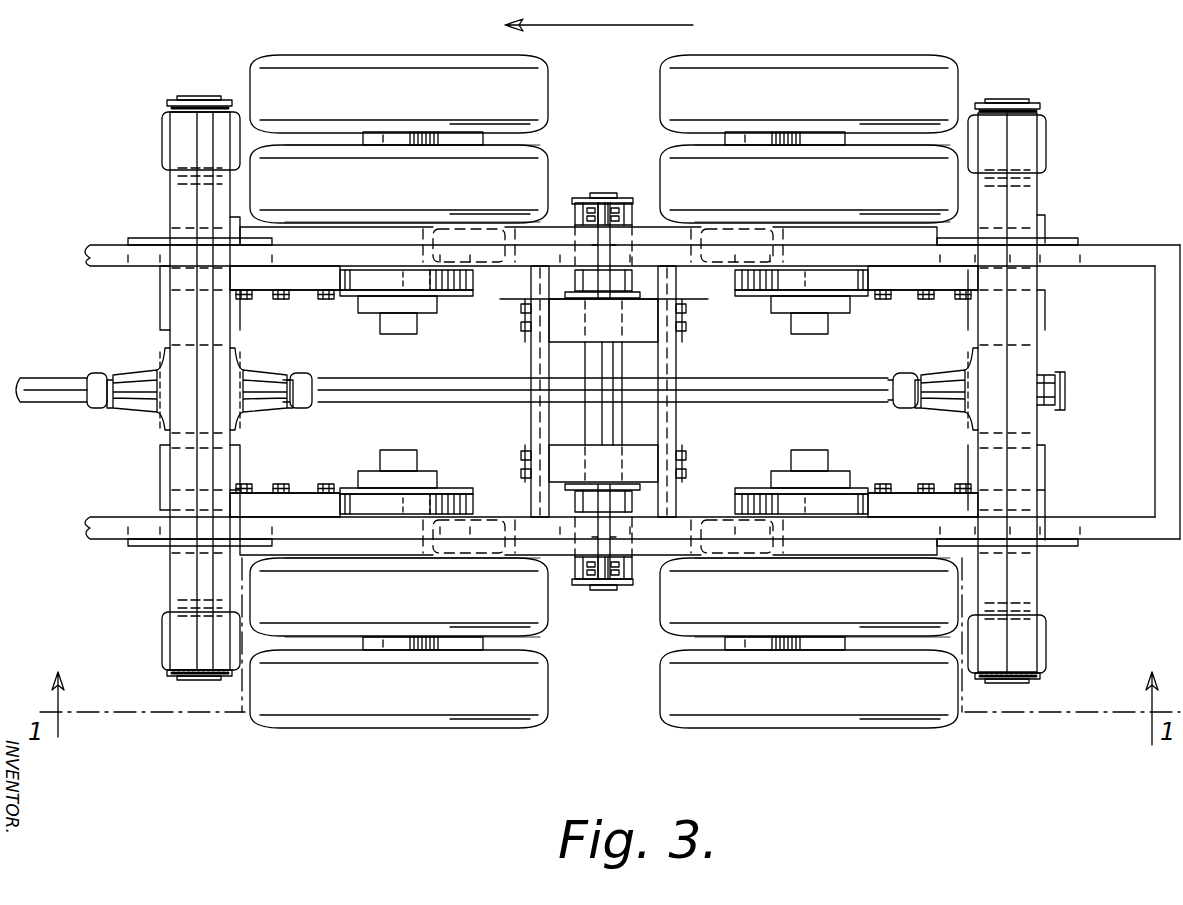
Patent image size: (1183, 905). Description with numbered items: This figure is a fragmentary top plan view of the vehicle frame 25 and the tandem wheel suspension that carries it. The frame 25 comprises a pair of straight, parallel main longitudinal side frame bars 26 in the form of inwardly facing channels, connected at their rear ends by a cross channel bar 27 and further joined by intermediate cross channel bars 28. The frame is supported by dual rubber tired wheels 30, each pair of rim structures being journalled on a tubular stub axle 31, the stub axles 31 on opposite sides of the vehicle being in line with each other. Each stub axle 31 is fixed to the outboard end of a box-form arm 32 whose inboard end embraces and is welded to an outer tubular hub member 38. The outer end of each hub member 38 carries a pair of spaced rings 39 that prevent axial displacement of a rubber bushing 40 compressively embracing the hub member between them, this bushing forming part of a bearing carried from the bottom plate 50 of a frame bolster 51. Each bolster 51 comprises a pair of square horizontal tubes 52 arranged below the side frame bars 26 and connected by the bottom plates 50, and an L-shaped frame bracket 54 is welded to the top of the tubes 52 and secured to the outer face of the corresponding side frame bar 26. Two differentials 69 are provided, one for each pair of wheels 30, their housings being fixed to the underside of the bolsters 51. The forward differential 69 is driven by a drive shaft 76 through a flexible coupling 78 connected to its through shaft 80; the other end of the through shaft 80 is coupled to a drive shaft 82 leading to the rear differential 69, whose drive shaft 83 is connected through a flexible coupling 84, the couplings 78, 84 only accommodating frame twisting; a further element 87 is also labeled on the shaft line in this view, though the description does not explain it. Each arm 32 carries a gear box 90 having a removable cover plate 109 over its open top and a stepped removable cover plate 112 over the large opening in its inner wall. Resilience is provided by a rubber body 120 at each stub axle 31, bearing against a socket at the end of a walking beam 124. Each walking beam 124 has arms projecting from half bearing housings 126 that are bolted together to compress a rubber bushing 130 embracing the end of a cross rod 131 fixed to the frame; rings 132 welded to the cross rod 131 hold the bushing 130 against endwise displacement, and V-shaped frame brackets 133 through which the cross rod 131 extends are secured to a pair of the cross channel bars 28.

The vehicle frame 25 is at (118, 240).
The main longitudinal side frame bars 26 is at (83, 253).
The cross channel bar 27 is at (1160, 330).
The intermediate cross channel bars 28 is at (536, 415).
The rubber tired wheels 30 is at (296, 46).
The tubular stub axle 31 is at (395, 222).
The arm 32 is at (320, 233).
The outer tubular hub member 38 is at (210, 68).
The spaced rings 39 is at (172, 104).
The rubber bushing 40 is at (228, 124).
The bottom plate 50 is at (165, 125).
The frame bolster 51 is at (168, 570).
The horizontal tubes 52 is at (205, 190).
The L-shaped frame bracket 54 is at (1078, 245).
The differential 69 is at (233, 365).
The drive shaft 76 is at (40, 390).
The flexible coupling 78 is at (93, 410).
The through shaft 80 is at (125, 355).
The drive shaft 82 is at (360, 370).
The drive shaft 83 is at (935, 350).
The flexible coupling 84 is at (905, 408).
The shaft collar 87 is at (300, 405).
The gear box 90 is at (315, 298).
The removable cover plate 109 is at (308, 258).
The removable cover plate 112 is at (412, 318).
The rubber body 120 is at (468, 240).
The walking beam 124 is at (558, 228).
The half bearing housing 126 is at (638, 215).
The rubber bushing 130 is at (595, 185).
The cross rod 131 is at (610, 365).
The rings 132 is at (617, 197).
The V-shaped frame brackets 133 is at (638, 336).